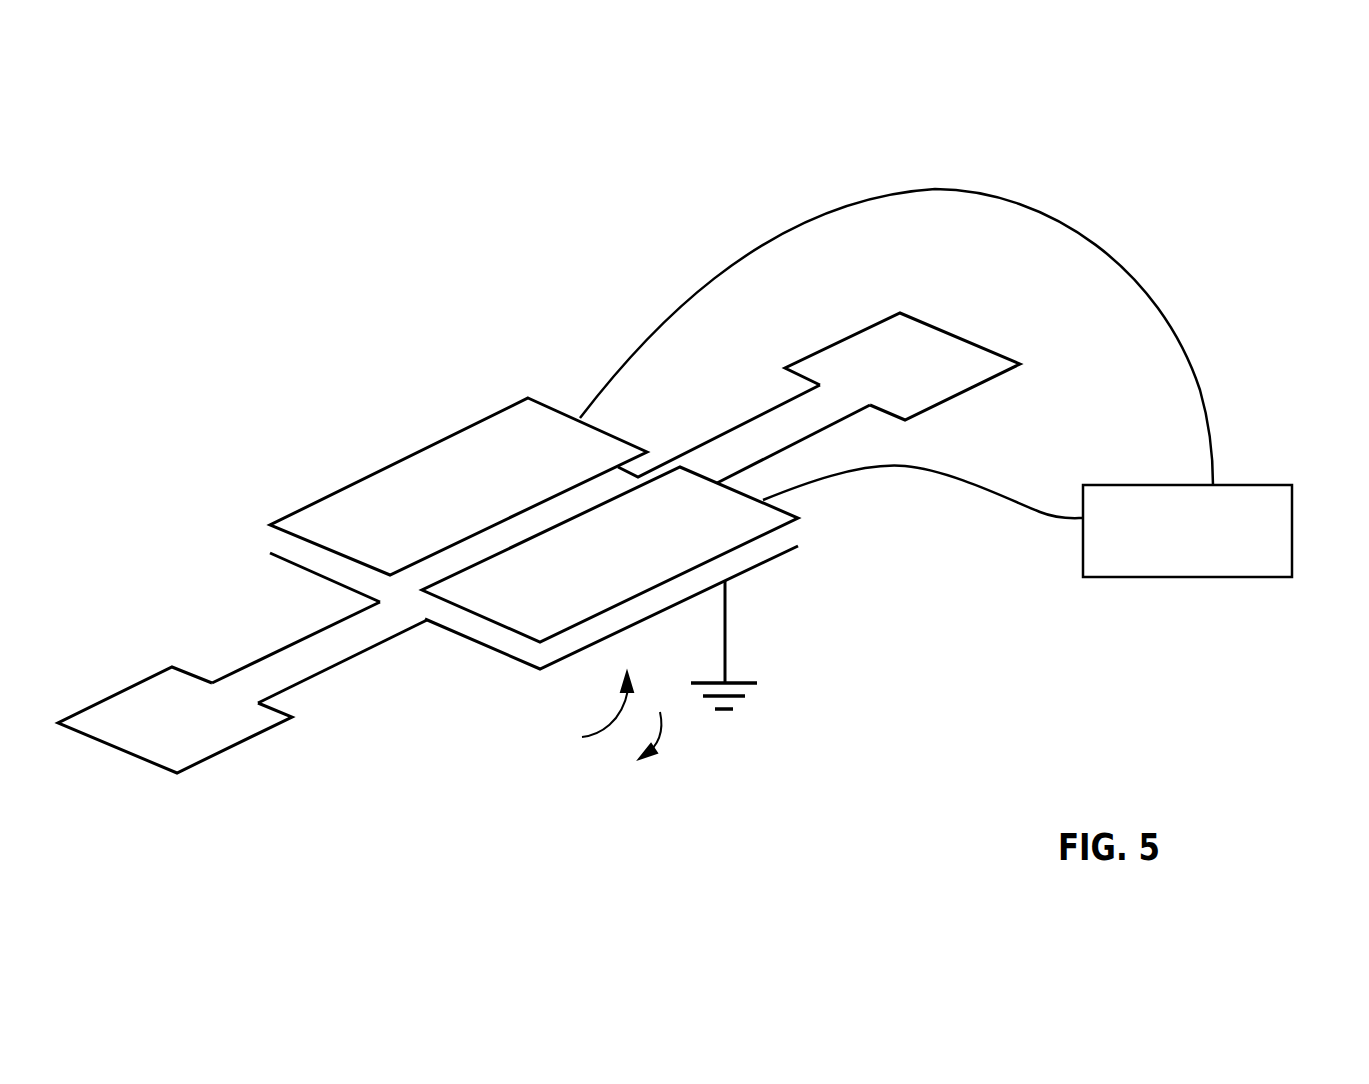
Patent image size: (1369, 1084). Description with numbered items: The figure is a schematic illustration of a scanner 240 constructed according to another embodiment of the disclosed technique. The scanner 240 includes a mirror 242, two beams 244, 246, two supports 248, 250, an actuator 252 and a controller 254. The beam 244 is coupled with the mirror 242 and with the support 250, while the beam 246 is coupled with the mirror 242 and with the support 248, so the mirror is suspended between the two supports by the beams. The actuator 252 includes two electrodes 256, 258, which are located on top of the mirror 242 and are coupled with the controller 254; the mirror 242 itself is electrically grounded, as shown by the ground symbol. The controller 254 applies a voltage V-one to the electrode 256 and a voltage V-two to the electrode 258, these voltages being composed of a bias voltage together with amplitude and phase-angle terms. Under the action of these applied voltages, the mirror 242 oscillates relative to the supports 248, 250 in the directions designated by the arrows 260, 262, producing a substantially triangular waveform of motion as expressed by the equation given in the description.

The scanner 240 is at (503, 204).
The mirror 242 is at (763, 563).
The beam 244 is at (775, 405).
The beam 246 is at (370, 650).
The support 248 is at (140, 683).
The support 250 is at (875, 324).
The actuator 252 is at (561, 363).
The controller 254 is at (1263, 485).
The electrode 256 is at (483, 420).
The electrode 258 is at (488, 620).
The arrow 260 is at (666, 735).
The arrow 262 is at (583, 712).